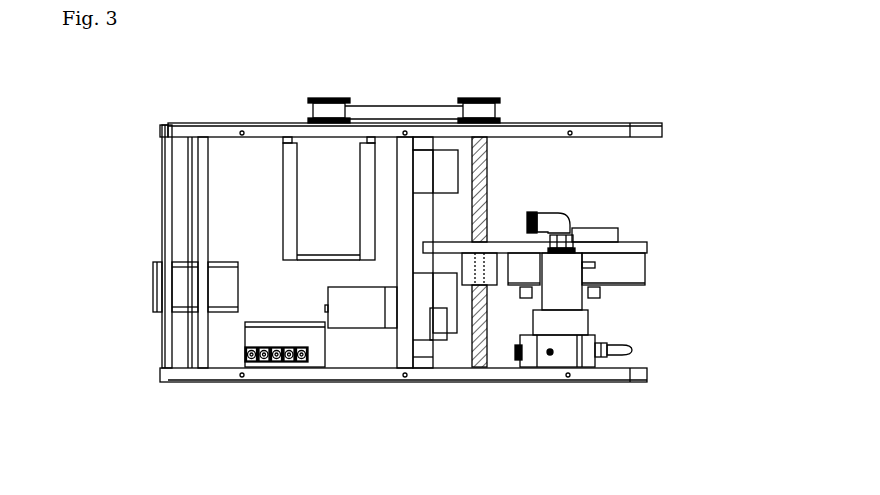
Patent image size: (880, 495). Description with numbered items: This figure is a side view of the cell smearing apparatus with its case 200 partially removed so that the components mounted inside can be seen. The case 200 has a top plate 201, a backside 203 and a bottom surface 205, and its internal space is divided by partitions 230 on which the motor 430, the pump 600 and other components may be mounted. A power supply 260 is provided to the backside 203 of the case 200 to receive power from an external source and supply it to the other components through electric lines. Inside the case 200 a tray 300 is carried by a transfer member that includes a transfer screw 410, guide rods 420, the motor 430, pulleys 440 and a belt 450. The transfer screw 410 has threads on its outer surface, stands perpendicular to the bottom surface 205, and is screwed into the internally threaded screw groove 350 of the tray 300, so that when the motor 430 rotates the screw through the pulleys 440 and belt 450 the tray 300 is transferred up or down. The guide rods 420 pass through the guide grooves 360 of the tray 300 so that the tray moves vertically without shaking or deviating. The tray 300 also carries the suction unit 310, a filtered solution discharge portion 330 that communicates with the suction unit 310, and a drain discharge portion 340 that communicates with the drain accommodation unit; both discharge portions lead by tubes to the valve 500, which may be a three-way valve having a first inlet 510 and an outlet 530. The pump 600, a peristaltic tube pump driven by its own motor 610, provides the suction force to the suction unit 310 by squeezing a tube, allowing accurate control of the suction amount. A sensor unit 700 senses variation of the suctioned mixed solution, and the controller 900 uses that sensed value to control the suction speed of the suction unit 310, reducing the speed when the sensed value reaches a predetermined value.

The case 200 is at (208, 120).
The upper plate 201 is at (662, 130).
The backside 203 is at (152, 312).
The bottom surface 205 is at (280, 372).
The partitions 230 is at (398, 345).
The power supply 260 is at (212, 300).
The tray 300 is at (630, 313).
The suction unit 310 is at (600, 232).
The filtered solution discharge portion 330 is at (600, 293).
The drain discharge portion 340 is at (498, 305).
The screw groove 350 is at (487, 250).
The guide grooves 360 is at (452, 250).
The transfer screw 410 is at (487, 185).
The guide rods 420 is at (437, 137).
The motor 430 is at (303, 177).
The pulleys 440 is at (323, 98).
The belt 450 is at (375, 108).
The valve 500 is at (590, 372).
The first inlet 510 is at (540, 213).
The outlet 530 is at (632, 350).
The pump 600 is at (422, 322).
The motor 610 is at (342, 320).
The sensor unit 700 is at (455, 168).
The controller 900 is at (267, 330).